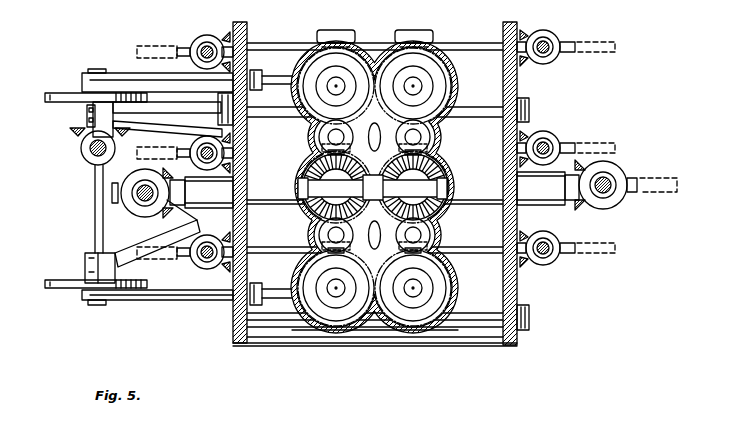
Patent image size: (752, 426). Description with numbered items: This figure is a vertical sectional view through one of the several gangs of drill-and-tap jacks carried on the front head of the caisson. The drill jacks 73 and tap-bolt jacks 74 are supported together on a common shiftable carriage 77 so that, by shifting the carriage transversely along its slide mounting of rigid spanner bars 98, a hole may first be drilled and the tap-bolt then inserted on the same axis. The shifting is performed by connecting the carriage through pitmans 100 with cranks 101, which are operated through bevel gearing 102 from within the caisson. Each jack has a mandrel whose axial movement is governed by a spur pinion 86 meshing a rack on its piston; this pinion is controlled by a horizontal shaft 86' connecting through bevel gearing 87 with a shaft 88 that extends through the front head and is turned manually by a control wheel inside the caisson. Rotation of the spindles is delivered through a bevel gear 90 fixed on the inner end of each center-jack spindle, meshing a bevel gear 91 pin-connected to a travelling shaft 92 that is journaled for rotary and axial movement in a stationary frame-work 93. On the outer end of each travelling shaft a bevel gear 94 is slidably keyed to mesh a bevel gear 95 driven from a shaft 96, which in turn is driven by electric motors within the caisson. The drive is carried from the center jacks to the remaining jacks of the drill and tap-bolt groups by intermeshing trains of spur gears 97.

The drill jack 73 is at (430, 70).
The tap-bolt jack 74 is at (318, 70).
The shiftable carriage 77 is at (452, 342).
The spur pinion 86 is at (375, 26).
The horizontal shaft 86' is at (375, 148).
The bevel gearing 87 is at (226, 24).
The shaft 88 is at (205, 50).
The bevel gear 90 is at (318, 215).
The bevel gear 91 is at (305, 208).
The travelling shaft 92 is at (270, 198).
The stationary frame-work 93 is at (263, 349).
The bevel gear 94 is at (160, 220).
The bevel gear 95 is at (130, 205).
The shaft 96 is at (140, 190).
The spur gears 97 is at (300, 270).
The spanner bars 98 is at (483, 115).
The pitman 100 is at (160, 82).
The crank 101 is at (55, 100).
The bevel gearing 102 is at (77, 148).